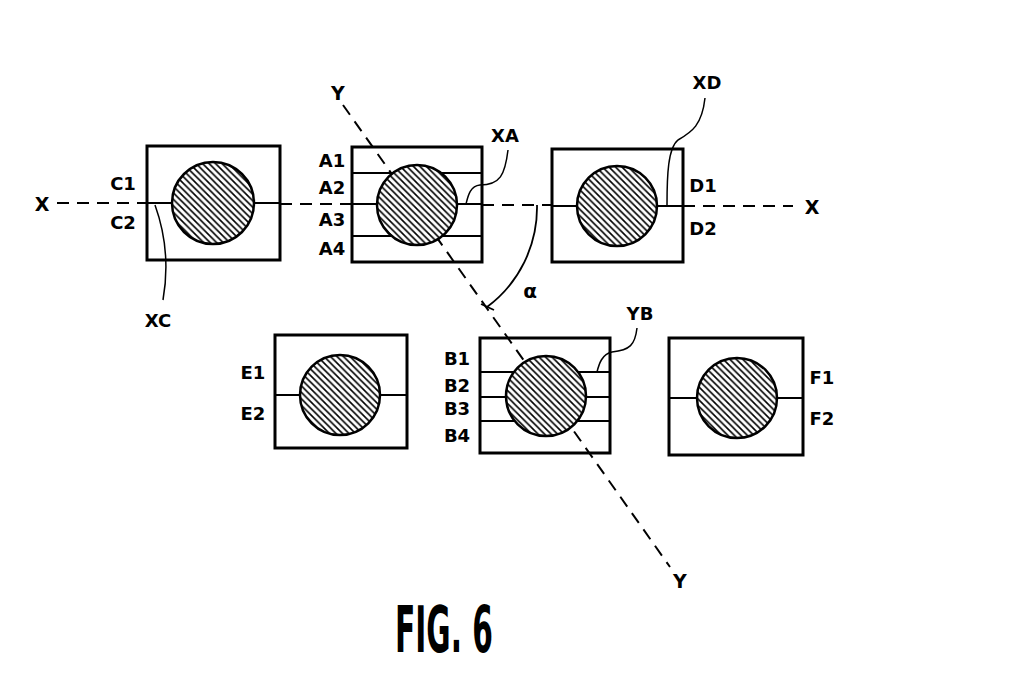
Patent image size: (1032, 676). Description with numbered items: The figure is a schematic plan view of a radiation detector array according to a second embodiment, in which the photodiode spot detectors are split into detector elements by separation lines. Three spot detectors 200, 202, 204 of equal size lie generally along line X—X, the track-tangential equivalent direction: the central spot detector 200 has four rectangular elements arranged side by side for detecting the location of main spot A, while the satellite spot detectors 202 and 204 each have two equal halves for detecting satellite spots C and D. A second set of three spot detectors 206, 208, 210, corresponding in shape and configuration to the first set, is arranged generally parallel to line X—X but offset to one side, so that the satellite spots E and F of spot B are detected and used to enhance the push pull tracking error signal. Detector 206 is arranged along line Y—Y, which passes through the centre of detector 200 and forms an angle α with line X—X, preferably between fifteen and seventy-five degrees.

The spot detector 200 is at (438, 147).
The spot detector 202 is at (229, 146).
The spot detector 204 is at (630, 149).
The spot detector 206 is at (515, 453).
The spot detector 208 is at (302, 450).
The spot detector 210 is at (767, 455).